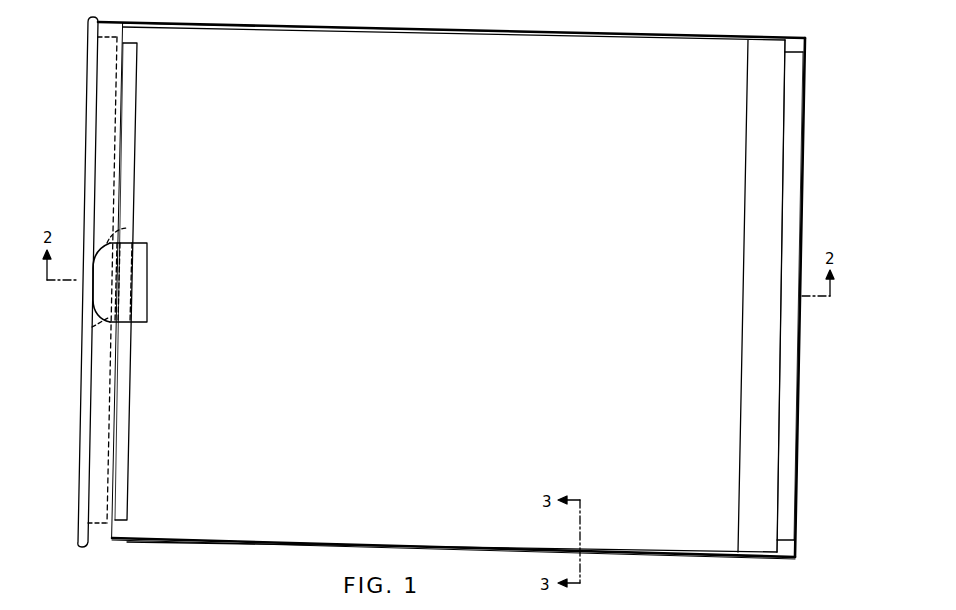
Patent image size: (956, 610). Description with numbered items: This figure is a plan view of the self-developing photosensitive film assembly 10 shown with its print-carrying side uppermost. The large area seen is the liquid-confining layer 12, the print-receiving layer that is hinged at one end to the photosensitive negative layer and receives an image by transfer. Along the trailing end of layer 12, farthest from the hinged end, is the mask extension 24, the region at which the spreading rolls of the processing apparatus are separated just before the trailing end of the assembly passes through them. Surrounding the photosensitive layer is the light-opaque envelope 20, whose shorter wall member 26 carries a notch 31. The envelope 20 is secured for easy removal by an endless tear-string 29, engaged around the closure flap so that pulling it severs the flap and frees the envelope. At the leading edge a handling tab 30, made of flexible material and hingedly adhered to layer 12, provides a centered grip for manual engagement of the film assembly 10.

The photosensitive film assembly 10 is at (231, 543).
The liquid-confining layer 12 is at (466, 285).
The light-opaque envelope 20 is at (805, 37).
The mask extension 24 is at (767, 55).
The envelope wall member 26 is at (800, 132).
The endless tear-string 29 is at (79, 442).
The tab member 30 is at (142, 264).
The notch 31 is at (92, 328).